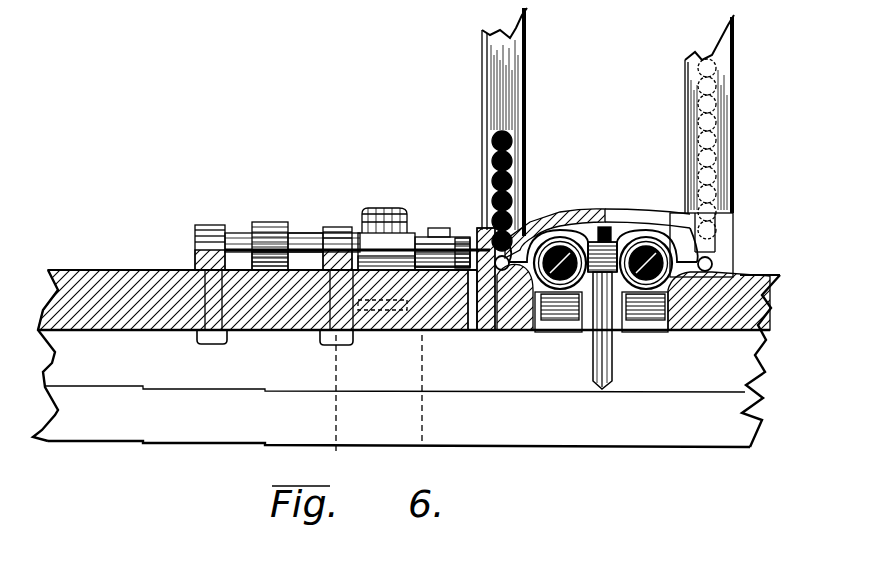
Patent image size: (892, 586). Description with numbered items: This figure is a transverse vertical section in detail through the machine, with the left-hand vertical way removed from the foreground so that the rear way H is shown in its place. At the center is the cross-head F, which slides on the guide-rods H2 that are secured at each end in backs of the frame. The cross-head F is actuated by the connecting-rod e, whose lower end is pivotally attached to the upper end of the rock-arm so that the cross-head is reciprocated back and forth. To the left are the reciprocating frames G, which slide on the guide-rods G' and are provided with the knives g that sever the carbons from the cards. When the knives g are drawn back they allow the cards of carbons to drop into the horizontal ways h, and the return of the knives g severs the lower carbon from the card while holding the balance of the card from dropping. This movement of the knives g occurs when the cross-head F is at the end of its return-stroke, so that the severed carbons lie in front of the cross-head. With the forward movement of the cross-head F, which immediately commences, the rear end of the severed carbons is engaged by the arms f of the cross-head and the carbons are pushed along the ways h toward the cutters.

The guide tube H is at (750, 90).
The guide-rods H2 is at (557, 250).
The cross-head F is at (613, 236).
The arms of the cross-head f is at (522, 225).
The horizontal ways h is at (504, 271).
The connecting-rod e is at (606, 374).
The reciprocating frames G is at (274, 230).
The guide-rods G' is at (313, 221).
The knives g is at (437, 241).